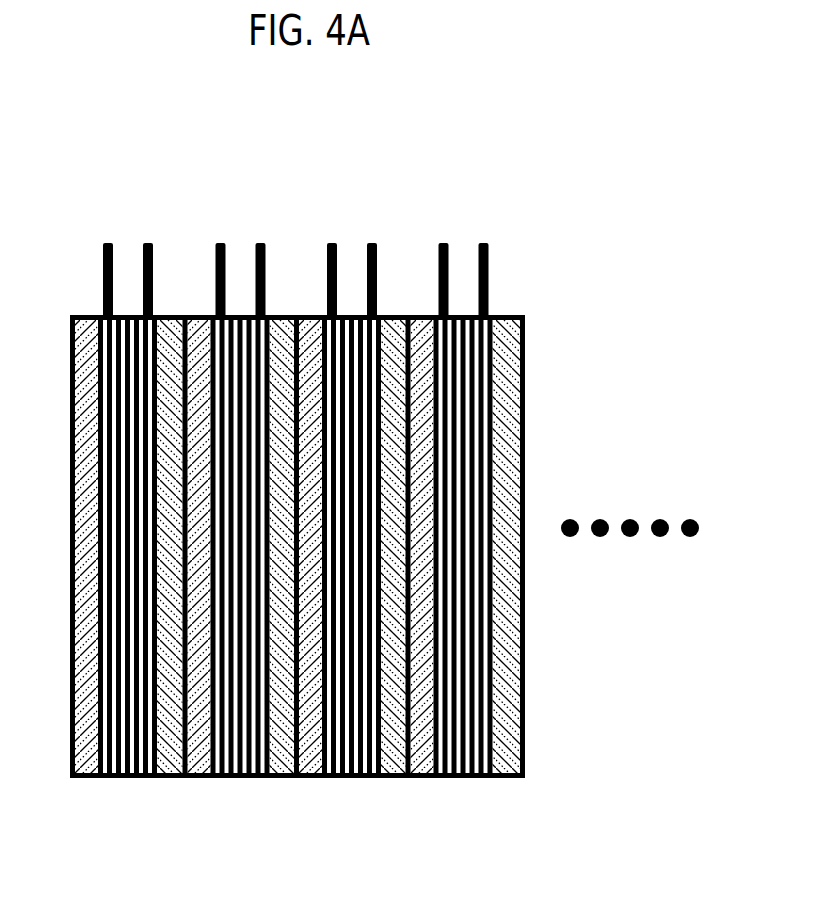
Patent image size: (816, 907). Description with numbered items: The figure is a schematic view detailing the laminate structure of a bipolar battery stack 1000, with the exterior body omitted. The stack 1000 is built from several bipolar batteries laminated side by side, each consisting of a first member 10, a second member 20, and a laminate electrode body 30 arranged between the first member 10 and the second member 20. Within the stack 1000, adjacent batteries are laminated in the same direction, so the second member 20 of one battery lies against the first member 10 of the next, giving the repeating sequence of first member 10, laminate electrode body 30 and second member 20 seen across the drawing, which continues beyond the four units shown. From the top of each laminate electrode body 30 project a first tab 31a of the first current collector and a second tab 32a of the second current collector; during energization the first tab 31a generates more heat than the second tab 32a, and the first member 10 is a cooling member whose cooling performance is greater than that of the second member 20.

The bipolar battery stack 1000 is at (268, 122).
The first member 10 is at (85, 765).
The second member 20 is at (168, 752).
The laminate electrode body 30 is at (132, 752).
The first tab 31a is at (105, 243).
The second tab 32a is at (150, 243).